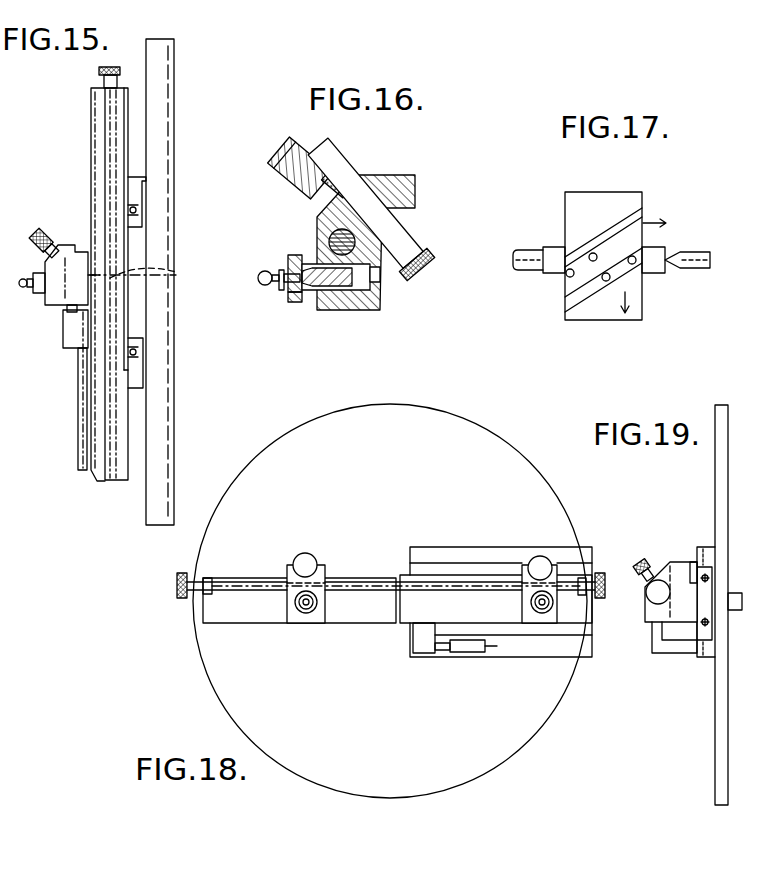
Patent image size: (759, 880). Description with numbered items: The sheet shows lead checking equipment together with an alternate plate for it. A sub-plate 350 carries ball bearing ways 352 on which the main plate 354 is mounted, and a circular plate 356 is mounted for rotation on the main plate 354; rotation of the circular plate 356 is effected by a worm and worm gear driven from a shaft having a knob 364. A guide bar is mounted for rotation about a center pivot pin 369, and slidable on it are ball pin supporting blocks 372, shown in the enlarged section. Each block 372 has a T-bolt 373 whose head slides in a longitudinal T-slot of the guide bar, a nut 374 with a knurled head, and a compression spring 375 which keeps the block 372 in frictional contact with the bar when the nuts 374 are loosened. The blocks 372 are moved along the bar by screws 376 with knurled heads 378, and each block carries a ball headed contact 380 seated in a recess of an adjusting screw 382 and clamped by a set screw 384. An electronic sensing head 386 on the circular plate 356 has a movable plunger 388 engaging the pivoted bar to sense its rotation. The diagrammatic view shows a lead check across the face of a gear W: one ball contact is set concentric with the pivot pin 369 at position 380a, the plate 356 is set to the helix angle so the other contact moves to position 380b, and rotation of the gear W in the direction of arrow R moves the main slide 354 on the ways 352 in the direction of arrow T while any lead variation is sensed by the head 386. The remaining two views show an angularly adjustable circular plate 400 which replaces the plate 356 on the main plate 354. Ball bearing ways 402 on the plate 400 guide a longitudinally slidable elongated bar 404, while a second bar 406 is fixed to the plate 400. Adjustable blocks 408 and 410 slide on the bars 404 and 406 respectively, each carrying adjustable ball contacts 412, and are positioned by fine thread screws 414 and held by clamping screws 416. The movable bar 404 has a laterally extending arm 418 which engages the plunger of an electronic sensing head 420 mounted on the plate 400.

In FIG. 15, the sub-plate 350 is at (175, 262).
In FIG. 15, the ball bearing ways 352 is at (137, 352).
In FIG. 15, the main plate 354 is at (120, 483).
In FIG. 15, the circular plate 356 is at (93, 484).
In FIG. 15, the knob 364 is at (99, 71).
In FIG. 15, the center pivot pin 369 is at (176, 272).
In FIG. 15, the ball pin supporting blocks 372 is at (48, 306).
In FIG. 16, the ball pin supporting blocks 372 is at (400, 176).
In FIG. 16, the T-bolt 373 is at (395, 246).
In FIG. 15, the nut 374 is at (42, 232).
In FIG. 16, the nut 374 is at (283, 170).
In FIG. 16, the compression spring 375 is at (333, 172).
In FIG. 16, the screws 376 is at (318, 236).
In FIG. 15, the knurled heads 378 is at (58, 284).
In FIG. 15, the ball headed contact 380 is at (23, 279).
In FIG. 16, the ball headed contact 380 is at (261, 285).
In FIG. 17, the ball contact position on center 380a is at (594, 253).
In FIG. 17, the ball contact position off center 380b is at (568, 276).
In FIG. 16, the adjusting screw 382 is at (290, 256).
In FIG. 16, the set screw 384 is at (300, 305).
In FIG. 15, the electronic sensing head 386 is at (70, 352).
In FIG. 15, the movable plunger 388 is at (43, 391).
In FIG. 18, the angularly adjustable circular plate 400 is at (463, 420).
In FIG. 19, the angularly adjustable circular plate 400 is at (718, 698).
In FIG. 19, the ball bearing ways 402 is at (700, 577).
In FIG. 18, the elongated bar 404 is at (402, 630).
In FIG. 19, the elongated bar 404 is at (645, 615).
In FIG. 18, the second bar 406 is at (268, 626).
In FIG. 18, the adjustable block 408 is at (525, 607).
In FIG. 18, the adjustable block 410 is at (333, 612).
In FIG. 18, the adjustable ball contacts 412 is at (312, 596).
In FIG. 18, the fine thread screws 414 is at (244, 582).
In FIG. 18, the clamping screws 416 is at (532, 560).
In FIG. 19, the clamping screws 416 is at (642, 560).
In FIG. 18, the laterally extending arm 418 is at (426, 656).
In FIG. 18, the electronic sensing head 420 is at (476, 655).
In FIG. 17, the gear W is at (565, 207).
In FIG. 17, the arrow indicating travel direction T is at (649, 222).
In FIG. 17, the arrow indicating rotation direction R is at (628, 297).